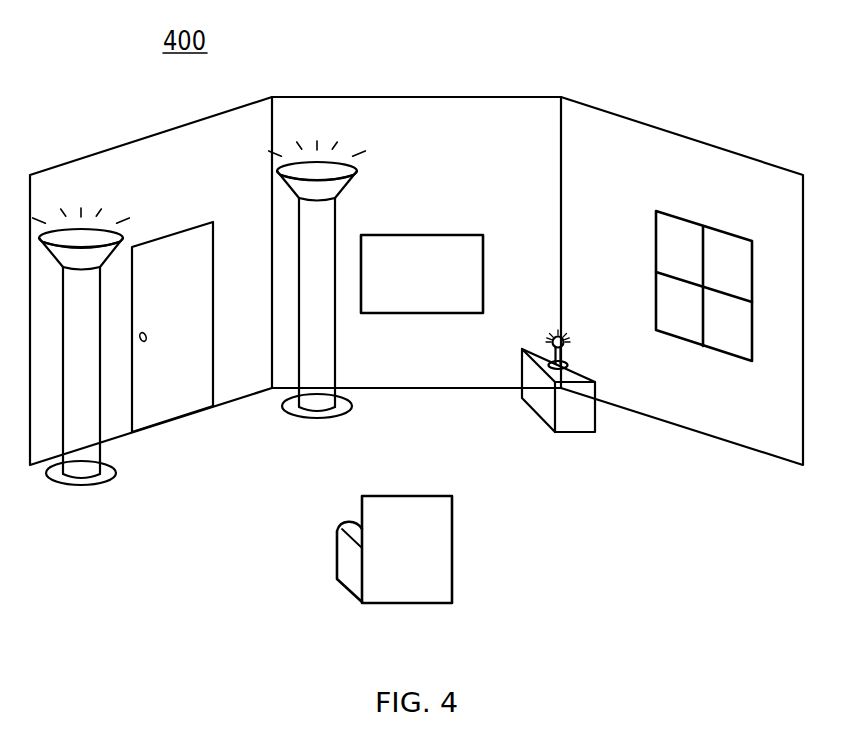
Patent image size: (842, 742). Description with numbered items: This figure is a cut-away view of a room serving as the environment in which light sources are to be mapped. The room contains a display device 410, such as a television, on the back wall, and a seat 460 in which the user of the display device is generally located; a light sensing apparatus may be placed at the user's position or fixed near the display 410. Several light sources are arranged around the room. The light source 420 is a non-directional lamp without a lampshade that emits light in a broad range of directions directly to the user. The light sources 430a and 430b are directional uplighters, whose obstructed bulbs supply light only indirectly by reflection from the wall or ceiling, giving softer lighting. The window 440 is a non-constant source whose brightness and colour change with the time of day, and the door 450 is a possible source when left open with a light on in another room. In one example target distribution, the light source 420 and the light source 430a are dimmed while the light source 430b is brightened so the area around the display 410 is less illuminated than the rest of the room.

The display device 410 is at (426, 250).
The light source 420 is at (552, 327).
The light source 430a is at (318, 420).
The light source 430b is at (95, 488).
The window 440 is at (700, 225).
The door 450 is at (183, 227).
The seat 460 is at (453, 552).